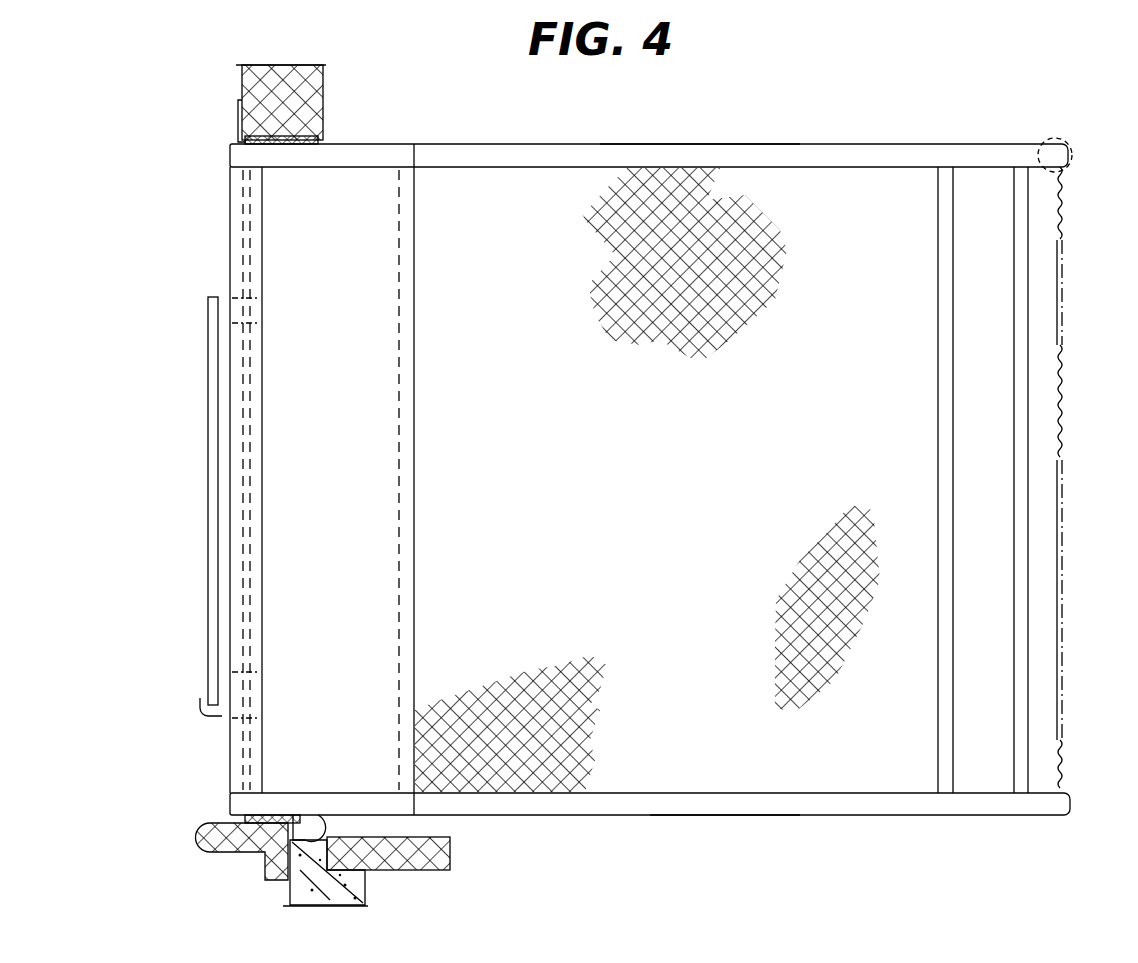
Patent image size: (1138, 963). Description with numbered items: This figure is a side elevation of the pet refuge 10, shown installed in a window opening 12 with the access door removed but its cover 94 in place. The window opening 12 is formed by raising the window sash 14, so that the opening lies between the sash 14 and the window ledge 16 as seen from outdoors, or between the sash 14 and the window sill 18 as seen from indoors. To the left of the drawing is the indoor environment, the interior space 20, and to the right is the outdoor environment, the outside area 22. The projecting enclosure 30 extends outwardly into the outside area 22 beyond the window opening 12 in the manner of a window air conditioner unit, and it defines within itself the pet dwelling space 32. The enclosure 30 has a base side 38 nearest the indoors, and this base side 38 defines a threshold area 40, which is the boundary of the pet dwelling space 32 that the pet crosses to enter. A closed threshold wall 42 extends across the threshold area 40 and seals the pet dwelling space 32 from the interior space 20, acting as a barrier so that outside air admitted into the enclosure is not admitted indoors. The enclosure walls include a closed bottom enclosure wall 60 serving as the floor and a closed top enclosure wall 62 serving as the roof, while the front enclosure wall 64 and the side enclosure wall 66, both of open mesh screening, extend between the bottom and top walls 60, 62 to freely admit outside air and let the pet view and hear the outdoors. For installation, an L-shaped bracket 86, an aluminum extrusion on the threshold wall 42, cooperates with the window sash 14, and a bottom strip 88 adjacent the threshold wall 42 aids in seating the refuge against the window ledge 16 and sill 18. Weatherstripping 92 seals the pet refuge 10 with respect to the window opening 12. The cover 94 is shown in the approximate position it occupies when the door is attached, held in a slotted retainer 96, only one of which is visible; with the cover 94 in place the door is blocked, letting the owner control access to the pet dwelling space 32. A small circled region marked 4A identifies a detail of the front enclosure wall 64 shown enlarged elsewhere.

The pet refuge 10 is at (721, 822).
The window opening 12 is at (188, 778).
The window sash 14 is at (298, 78).
The window ledge 16 is at (450, 856).
The window sill 18 is at (246, 852).
The interior space 20 is at (179, 499).
The outside area 22 is at (417, 97).
The projecting enclosure 30 is at (753, 142).
The pet dwelling space 32 is at (573, 200).
The base side 38 is at (230, 197).
The threshold area 40 is at (230, 748).
The threshold wall 42 is at (230, 262).
The detail view circle 4A is at (1050, 137).
The bottom enclosure wall 60 is at (840, 816).
The top enclosure wall 62 is at (687, 143).
The front enclosure wall 64 is at (1066, 438).
The side enclosure wall 66 is at (702, 442).
The L-shaped bracket 86 is at (240, 112).
The bottom strip 88 is at (302, 826).
The weatherstripping 92 is at (308, 142).
The cover 94 is at (208, 375).
The slotted retainer 96 is at (205, 707).